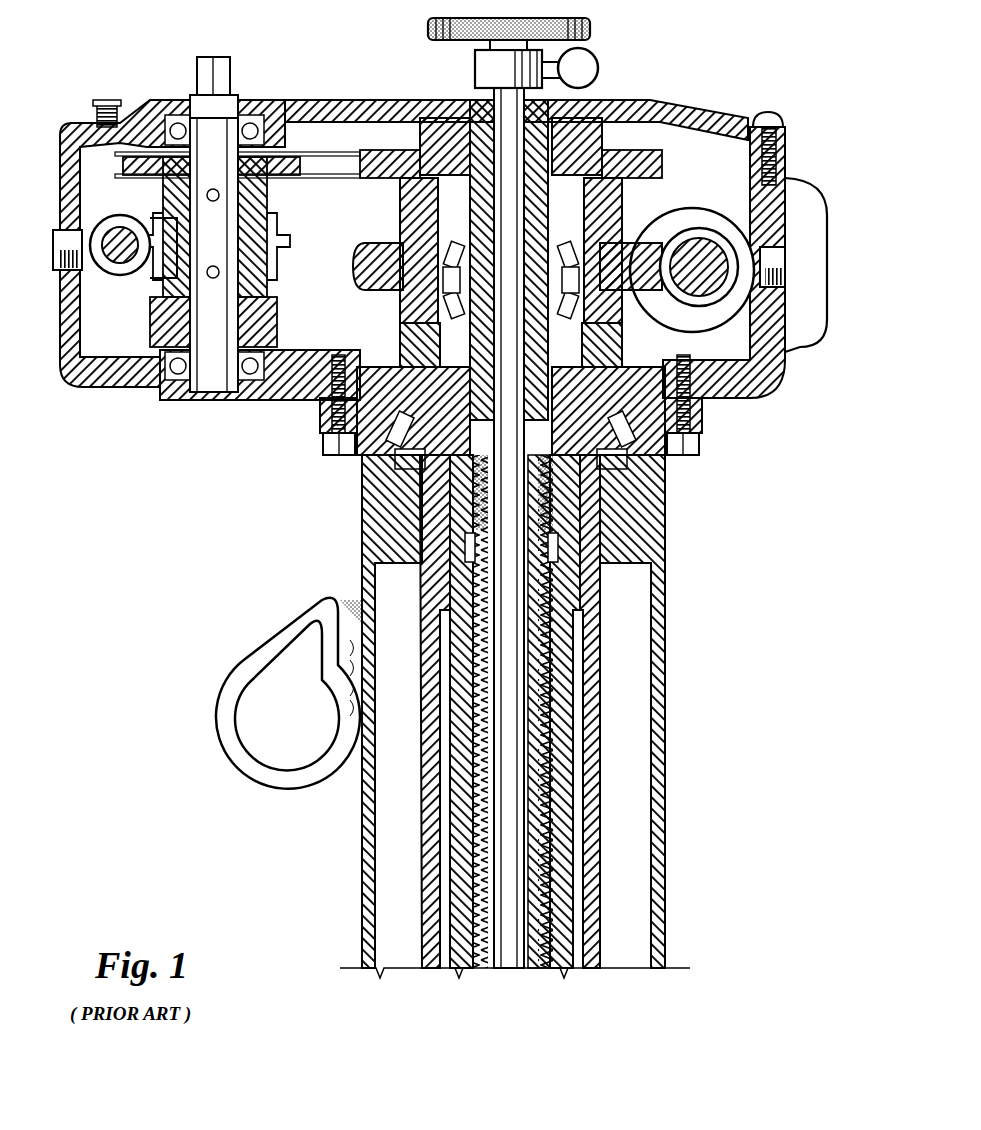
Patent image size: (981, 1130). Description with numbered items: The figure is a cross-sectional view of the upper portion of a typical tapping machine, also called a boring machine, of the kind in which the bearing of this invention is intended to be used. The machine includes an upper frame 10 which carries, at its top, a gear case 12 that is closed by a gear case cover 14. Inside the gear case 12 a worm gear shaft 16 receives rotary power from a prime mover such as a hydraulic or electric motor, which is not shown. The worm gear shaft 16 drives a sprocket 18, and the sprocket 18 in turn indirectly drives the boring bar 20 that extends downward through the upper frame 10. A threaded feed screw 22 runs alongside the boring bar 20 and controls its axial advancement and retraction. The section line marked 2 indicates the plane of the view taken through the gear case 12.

The upper frame 10 is at (667, 870).
The gear case 12 is at (762, 372).
The gear case cover 14 is at (735, 118).
The worm gear shaft 16 is at (697, 262).
The sprocket 18 is at (655, 240).
The boring bar 20 is at (570, 816).
The threaded feed screw 22 is at (533, 748).
The section line 2- 2 is at (90, 250).